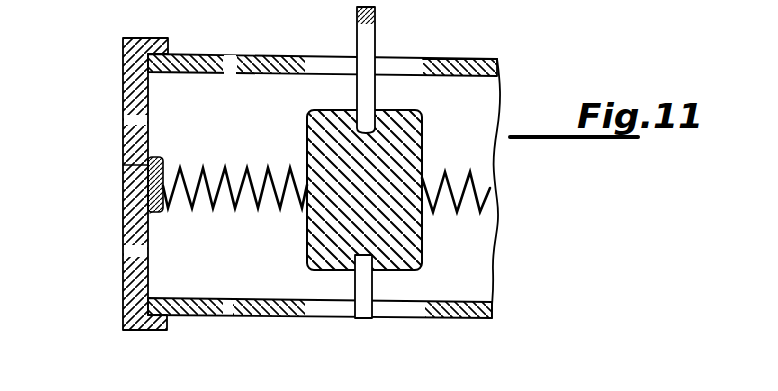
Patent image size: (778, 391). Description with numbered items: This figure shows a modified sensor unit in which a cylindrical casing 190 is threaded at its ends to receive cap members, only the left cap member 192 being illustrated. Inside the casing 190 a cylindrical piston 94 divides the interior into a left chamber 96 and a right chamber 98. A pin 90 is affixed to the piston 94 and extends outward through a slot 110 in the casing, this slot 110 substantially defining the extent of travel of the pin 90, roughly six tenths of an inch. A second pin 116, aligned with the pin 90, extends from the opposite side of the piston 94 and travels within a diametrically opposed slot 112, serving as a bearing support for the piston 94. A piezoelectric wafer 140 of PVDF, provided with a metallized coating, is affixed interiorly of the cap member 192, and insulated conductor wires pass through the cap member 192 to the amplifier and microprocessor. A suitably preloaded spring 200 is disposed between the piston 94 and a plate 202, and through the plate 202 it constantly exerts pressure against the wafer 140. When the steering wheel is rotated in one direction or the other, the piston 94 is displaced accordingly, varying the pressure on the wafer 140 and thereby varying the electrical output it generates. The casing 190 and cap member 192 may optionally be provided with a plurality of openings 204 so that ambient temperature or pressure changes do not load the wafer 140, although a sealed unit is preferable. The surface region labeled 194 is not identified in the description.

The pin 90 is at (377, 31).
The cylindrical piston 94 is at (410, 250).
The left chamber 96 is at (265, 130).
The right chamber 98 is at (476, 133).
The slot 110 is at (412, 68).
The slot 112 is at (402, 310).
The pin 116 is at (357, 307).
The piezoelectric wafer 140 is at (150, 213).
The cylindrical casing 190 is at (185, 57).
The cap member 192 is at (124, 71).
The end wall surface 194 is at (148, 183).
The spring 200 is at (263, 205).
The plate 202 is at (158, 163).
The openings 204 is at (238, 57).